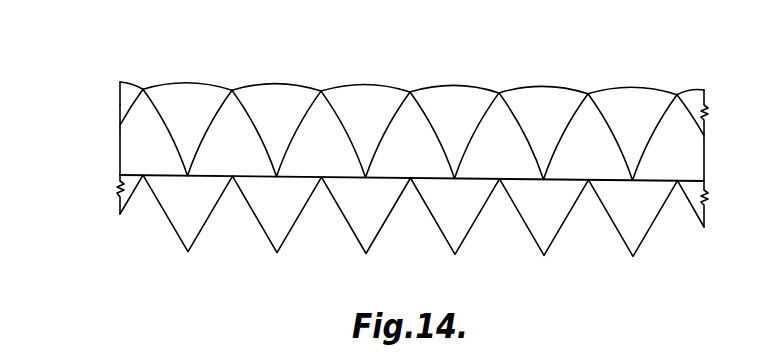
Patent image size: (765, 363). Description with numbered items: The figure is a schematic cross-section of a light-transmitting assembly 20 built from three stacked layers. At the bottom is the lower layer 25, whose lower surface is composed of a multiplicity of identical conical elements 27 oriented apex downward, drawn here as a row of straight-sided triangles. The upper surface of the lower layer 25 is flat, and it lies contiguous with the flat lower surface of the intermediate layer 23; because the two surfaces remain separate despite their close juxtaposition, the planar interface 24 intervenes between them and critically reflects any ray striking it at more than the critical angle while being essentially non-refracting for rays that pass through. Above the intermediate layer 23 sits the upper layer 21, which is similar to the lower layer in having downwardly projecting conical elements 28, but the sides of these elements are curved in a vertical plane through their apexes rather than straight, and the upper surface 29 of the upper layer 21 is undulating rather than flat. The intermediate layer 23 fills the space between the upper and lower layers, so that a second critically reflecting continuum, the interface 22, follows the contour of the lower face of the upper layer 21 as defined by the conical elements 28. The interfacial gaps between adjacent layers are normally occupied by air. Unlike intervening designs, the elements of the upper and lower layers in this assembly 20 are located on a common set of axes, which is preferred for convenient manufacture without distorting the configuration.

The light-transmitting assembly 20 is at (103, 169).
The upper layer 21 is at (120, 92).
The interface 22 is at (120, 110).
The intermediate layer 23 is at (134, 146).
The interface 24 is at (168, 177).
The lower layer 25 is at (120, 200).
The conical elements 27 is at (372, 233).
The conical elements 28 is at (273, 149).
The upper surface 29 is at (196, 81).